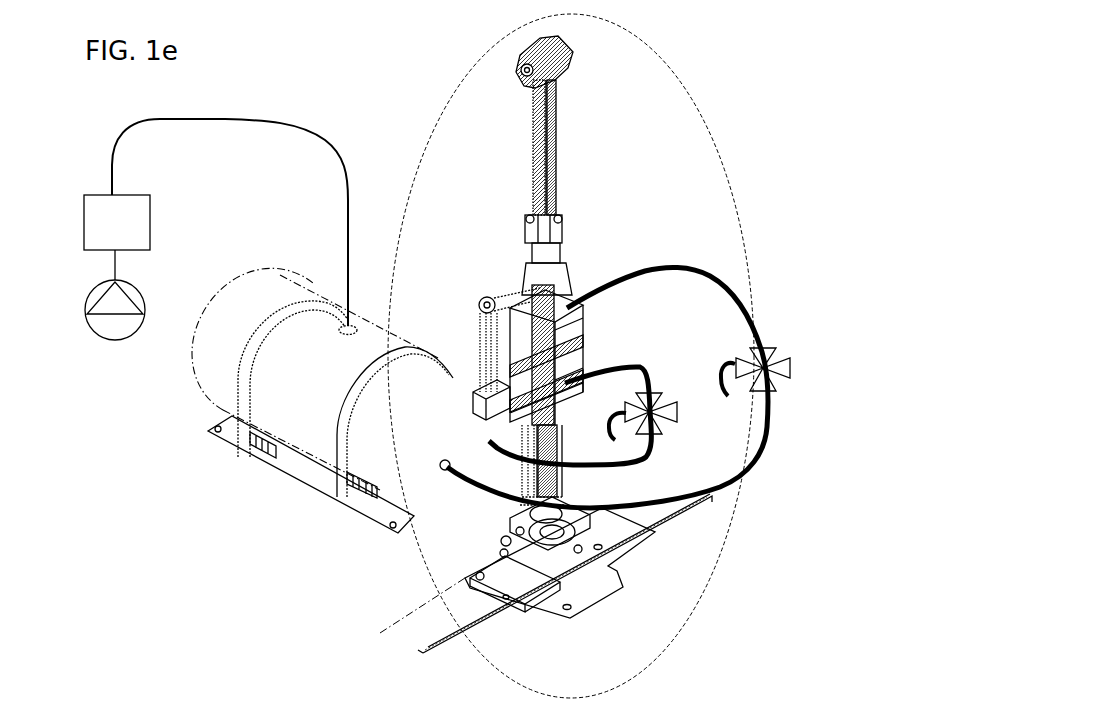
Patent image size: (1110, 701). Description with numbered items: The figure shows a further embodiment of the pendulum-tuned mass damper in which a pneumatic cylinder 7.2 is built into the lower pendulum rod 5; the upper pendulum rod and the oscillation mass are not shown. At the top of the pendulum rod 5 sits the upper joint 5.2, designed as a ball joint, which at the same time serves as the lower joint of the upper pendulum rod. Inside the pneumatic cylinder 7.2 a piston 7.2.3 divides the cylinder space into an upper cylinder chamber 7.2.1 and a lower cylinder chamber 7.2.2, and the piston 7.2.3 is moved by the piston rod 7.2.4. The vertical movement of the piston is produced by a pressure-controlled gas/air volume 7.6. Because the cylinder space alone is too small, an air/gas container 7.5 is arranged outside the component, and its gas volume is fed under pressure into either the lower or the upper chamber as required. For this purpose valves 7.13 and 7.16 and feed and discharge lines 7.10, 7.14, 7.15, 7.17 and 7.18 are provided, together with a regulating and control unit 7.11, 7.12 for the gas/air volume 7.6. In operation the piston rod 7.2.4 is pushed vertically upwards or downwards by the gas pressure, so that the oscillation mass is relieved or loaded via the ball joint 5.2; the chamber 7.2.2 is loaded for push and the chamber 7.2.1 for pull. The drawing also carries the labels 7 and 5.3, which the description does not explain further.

The lower pendulum rod 5 is at (452, 88).
The pressure generating system / tank 7 is at (316, 379).
The upper joint 5.2 is at (527, 72).
The guide rail and base plate 5.3 is at (420, 568).
The pneumatic cylinder 7.2 is at (570, 282).
The upper cylinder chamber 7.2.1 is at (567, 327).
The lower cylinder chamber 7.2.2 is at (557, 370).
The piston 7.2.3 is at (478, 381).
The piston rod 7.2.4 is at (525, 252).
The air/gas container 7.5 is at (307, 450).
The pressure-controlled gas/air volume 7.6 is at (443, 471).
The feed and discharge line 7.10 is at (352, 287).
The regulating and control unit 7.11 is at (138, 220).
The regulating and control unit 7.12 is at (113, 333).
The valve 7.13 is at (779, 366).
The feed and discharge line 7.14 is at (623, 276).
The feed and discharge line 7.15 is at (730, 388).
The valve 7.16 is at (664, 427).
The feed and discharge line 7.17 is at (654, 384).
The feed and discharge line 7.18 is at (622, 437).